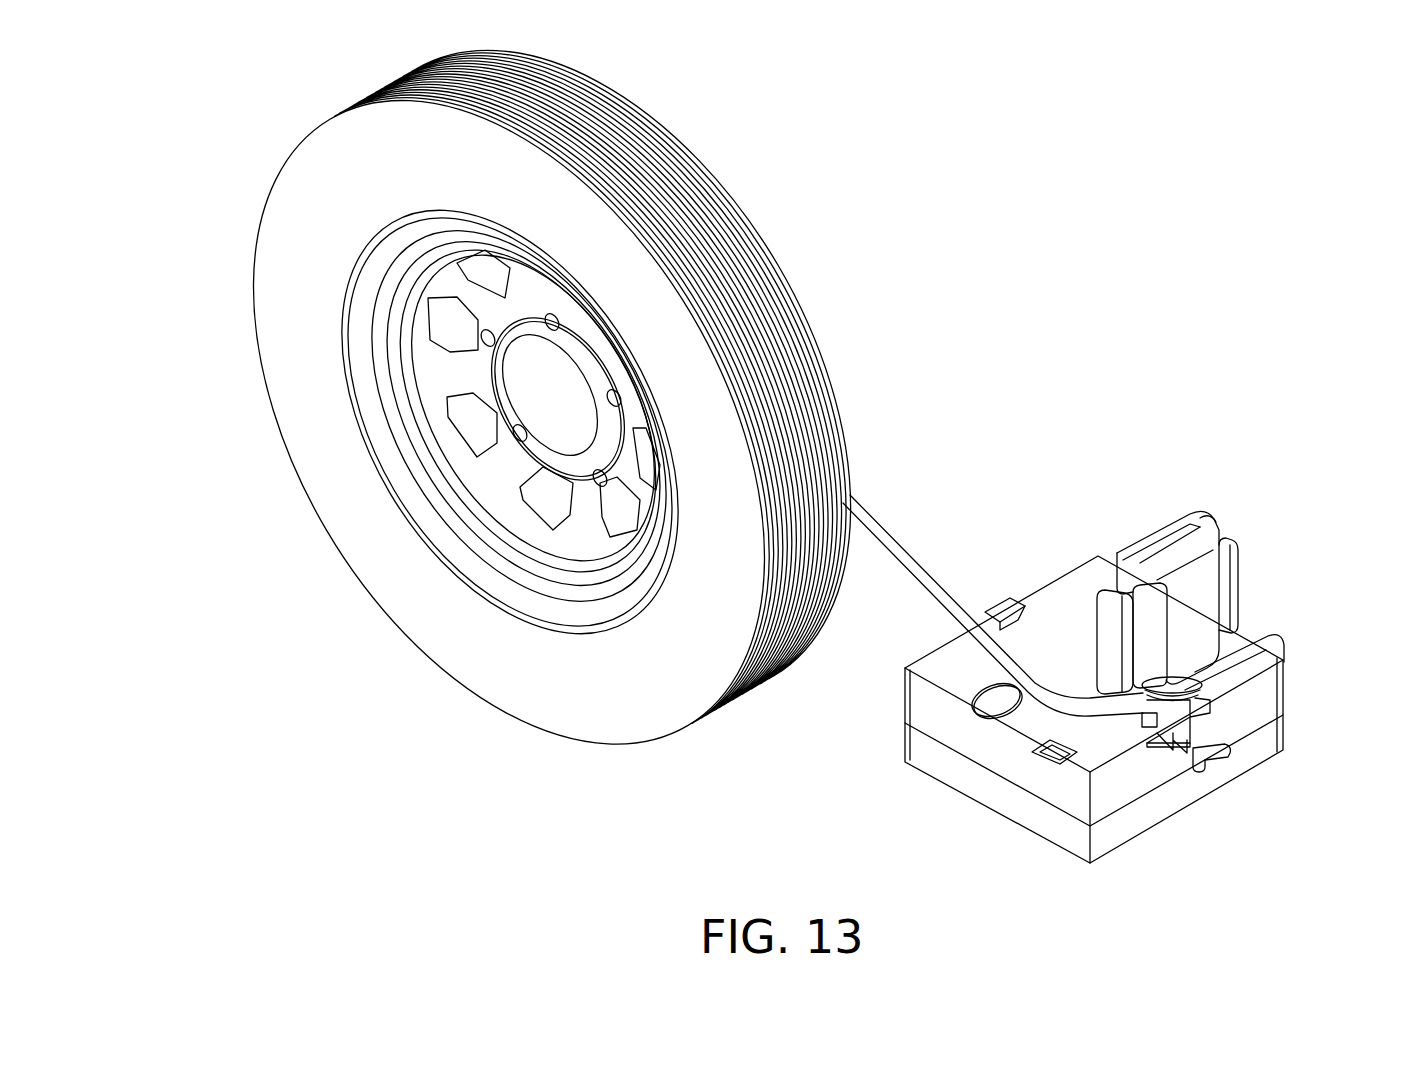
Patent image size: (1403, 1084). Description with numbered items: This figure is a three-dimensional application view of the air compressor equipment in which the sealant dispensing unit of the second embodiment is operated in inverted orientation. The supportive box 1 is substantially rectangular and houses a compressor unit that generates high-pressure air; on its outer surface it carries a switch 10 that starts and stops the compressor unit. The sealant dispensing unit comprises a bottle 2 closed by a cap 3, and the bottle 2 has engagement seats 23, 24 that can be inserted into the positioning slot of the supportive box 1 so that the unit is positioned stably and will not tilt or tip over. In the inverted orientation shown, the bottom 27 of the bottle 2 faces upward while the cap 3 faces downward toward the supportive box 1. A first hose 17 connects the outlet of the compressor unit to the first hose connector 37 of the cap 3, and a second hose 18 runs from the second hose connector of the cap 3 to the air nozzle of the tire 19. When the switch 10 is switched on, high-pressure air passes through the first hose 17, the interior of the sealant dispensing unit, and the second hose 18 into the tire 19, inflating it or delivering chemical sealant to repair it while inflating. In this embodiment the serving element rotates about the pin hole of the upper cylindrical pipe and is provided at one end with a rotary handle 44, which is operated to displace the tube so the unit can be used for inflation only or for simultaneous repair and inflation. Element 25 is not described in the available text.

The supportive box 1 is at (905, 826).
The bottle 2 is at (1203, 607).
The cap 3 is at (1212, 705).
The switch 10 is at (1046, 766).
The first hose 17 is at (1277, 668).
The second hose 18 is at (905, 560).
The tire 19 is at (317, 166).
The engagement seat 23 is at (1232, 573).
The engagement seat 24 is at (1107, 627).
The cap corner 25 is at (1218, 528).
The bottom 27 is at (1160, 533).
The first hose connector 37 is at (1157, 735).
The rotary handle 44 is at (1232, 750).